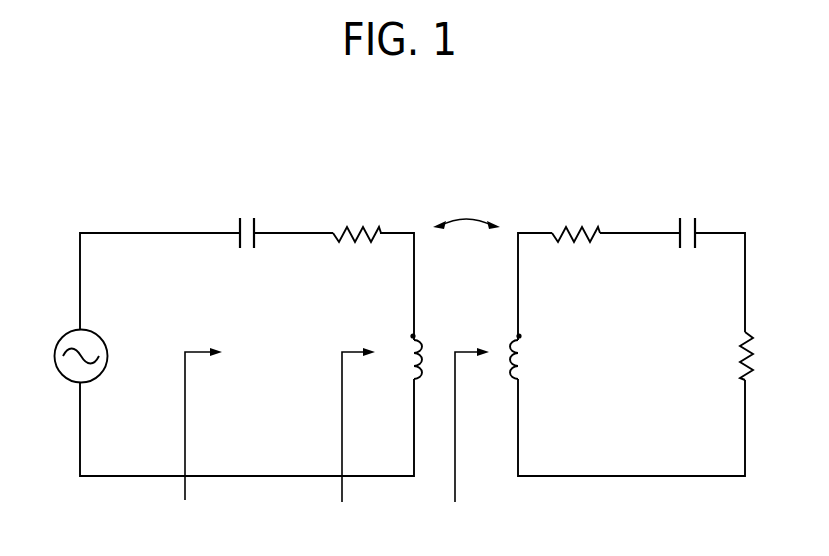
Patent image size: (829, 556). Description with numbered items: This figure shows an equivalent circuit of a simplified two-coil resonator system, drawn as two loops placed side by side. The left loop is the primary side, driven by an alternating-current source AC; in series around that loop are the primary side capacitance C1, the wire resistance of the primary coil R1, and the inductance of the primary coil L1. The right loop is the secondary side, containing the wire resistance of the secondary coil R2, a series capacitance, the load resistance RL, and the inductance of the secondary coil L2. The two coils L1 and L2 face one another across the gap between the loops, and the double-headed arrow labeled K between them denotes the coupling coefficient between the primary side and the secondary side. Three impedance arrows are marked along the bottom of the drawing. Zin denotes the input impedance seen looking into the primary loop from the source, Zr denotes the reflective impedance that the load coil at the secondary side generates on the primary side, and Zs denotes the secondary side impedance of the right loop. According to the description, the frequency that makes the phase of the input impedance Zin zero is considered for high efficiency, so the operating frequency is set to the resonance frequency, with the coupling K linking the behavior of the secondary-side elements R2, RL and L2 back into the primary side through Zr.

The AC power source AC is at (66, 356).
The primary side capacitance C1 is at (466, 219).
The wire resistance of the primary coil R1 is at (357, 216).
The wire resistance of the secondary coil R2 is at (576, 216).
The load resistance RL is at (759, 356).
The inductance of the primary coil L1 is at (403, 356).
The inductance of the secondary coil L2 is at (529, 356).
The coupling coefficient K is at (466, 211).
The input impedance Zin is at (197, 441).
The reflective impedance Zr is at (355, 441).
The secondary side impedance Zs is at (468, 441).